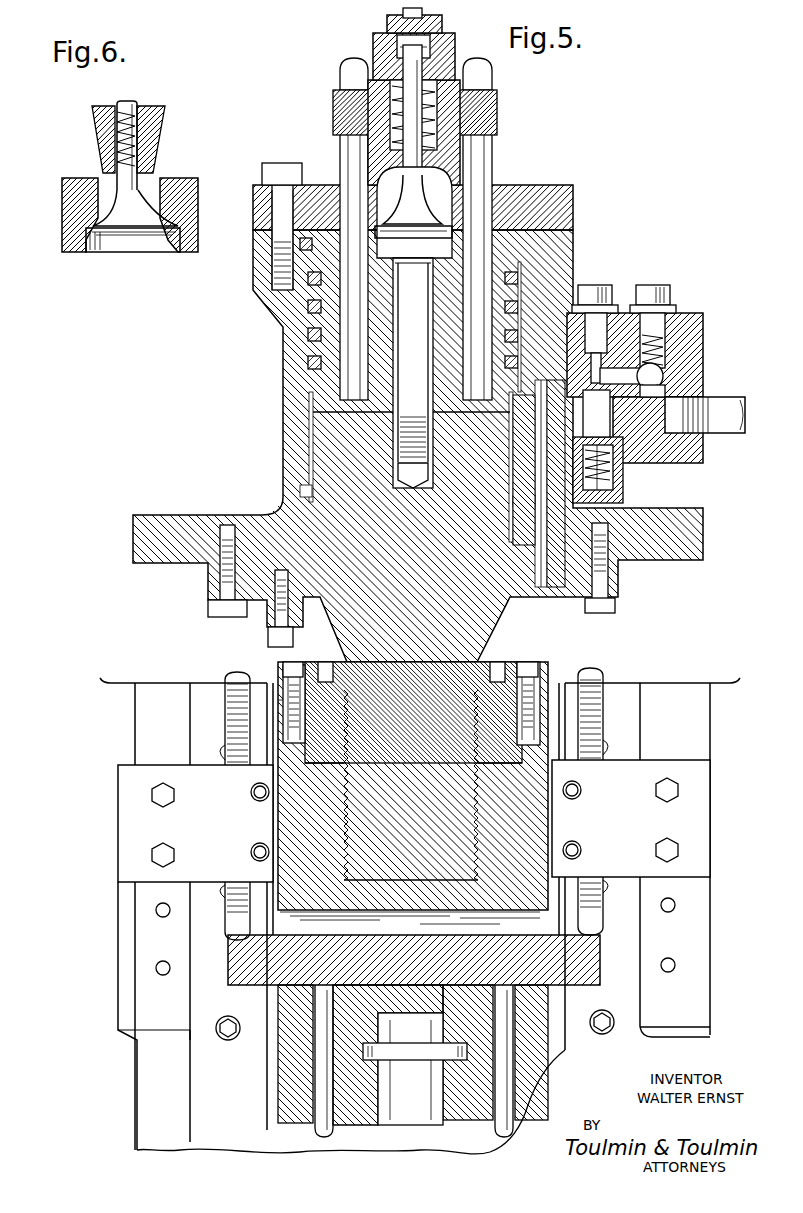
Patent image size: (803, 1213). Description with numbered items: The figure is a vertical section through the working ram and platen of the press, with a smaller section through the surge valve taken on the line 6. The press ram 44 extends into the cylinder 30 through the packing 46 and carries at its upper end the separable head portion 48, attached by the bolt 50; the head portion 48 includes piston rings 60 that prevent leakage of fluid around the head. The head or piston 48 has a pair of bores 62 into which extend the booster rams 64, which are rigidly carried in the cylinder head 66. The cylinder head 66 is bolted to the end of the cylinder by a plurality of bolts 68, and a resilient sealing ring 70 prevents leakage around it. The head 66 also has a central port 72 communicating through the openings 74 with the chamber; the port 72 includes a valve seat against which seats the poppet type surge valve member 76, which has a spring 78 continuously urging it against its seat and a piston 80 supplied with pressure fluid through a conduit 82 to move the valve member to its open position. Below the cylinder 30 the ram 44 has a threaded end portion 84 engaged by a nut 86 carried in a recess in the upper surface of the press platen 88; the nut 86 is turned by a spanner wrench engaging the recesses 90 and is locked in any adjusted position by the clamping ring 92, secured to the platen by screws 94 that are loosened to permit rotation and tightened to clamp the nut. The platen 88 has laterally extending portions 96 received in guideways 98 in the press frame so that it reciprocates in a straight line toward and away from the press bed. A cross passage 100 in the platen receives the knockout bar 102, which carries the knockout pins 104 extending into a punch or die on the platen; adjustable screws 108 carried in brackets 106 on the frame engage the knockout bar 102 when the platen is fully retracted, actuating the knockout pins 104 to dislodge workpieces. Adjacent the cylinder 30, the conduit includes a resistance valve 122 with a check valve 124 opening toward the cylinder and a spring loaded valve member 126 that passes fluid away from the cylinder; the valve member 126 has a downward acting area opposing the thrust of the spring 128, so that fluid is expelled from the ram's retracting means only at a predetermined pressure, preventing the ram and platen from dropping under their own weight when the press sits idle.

In FIG. 5, the section line 6 is at (410, 155).
In FIG. 5, the cylinder 30 is at (284, 436).
In FIG. 5, the press ram 44 is at (488, 632).
In FIG. 5, the packing 46 is at (300, 565).
In FIG. 5, the head portion 48 is at (520, 262).
In FIG. 5, the bolt 50 is at (413, 373).
In FIG. 5, the piston rings 60 is at (508, 312).
In FIG. 5, the bores 62 is at (330, 287).
In FIG. 5, the booster rams 64 is at (340, 335).
In FIG. 6, the cylinder head 66 is at (72, 200).
In FIG. 5, the cylinder head 66 is at (565, 190).
In FIG. 5, the bolts 68 is at (270, 205).
In FIG. 5, the resilient sealing ring 70 is at (300, 243).
In FIG. 6, the central port 72 is at (100, 252).
In FIG. 5, the central port 72 is at (440, 185).
In FIG. 6, the openings 74 is at (97, 172).
In FIG. 6, the surge valve member 76 is at (135, 103).
In FIG. 5, the surge valve member 76 is at (420, 175).
In FIG. 6, the spring 78 is at (150, 120).
In FIG. 5, the spring 78 is at (438, 92).
In FIG. 5, the piston 80 is at (390, 66).
In FIG. 5, the conduit 82 is at (400, 16).
In FIG. 5, the threaded end portion 84 is at (492, 676).
In FIG. 5, the nut 86 is at (520, 745).
In FIG. 5, the press platen 88 is at (540, 812).
In FIG. 5, the recesses 90 is at (328, 662).
In FIG. 5, the clamping ring 92 is at (280, 668).
In FIG. 5, the screws 94 is at (538, 682).
In FIG. 5, the laterally extending portions 96 is at (274, 1150).
In FIG. 5, the guideways 98 is at (236, 1082).
In FIG. 5, the cross passage 100 is at (540, 925).
In FIG. 5, the knockout bar 102 is at (246, 980).
In FIG. 5, the knockout pins 104 is at (500, 1128).
In FIG. 5, the brackets 106 is at (226, 827).
In FIG. 5, the adjustable screws 108 is at (226, 680).
In FIG. 5, the resistance valve 122 is at (700, 340).
In FIG. 5, the check valve 124 is at (664, 374).
In FIG. 5, the spring loaded valve member 126 is at (618, 410).
In FIG. 5, the spring 128 is at (612, 480).